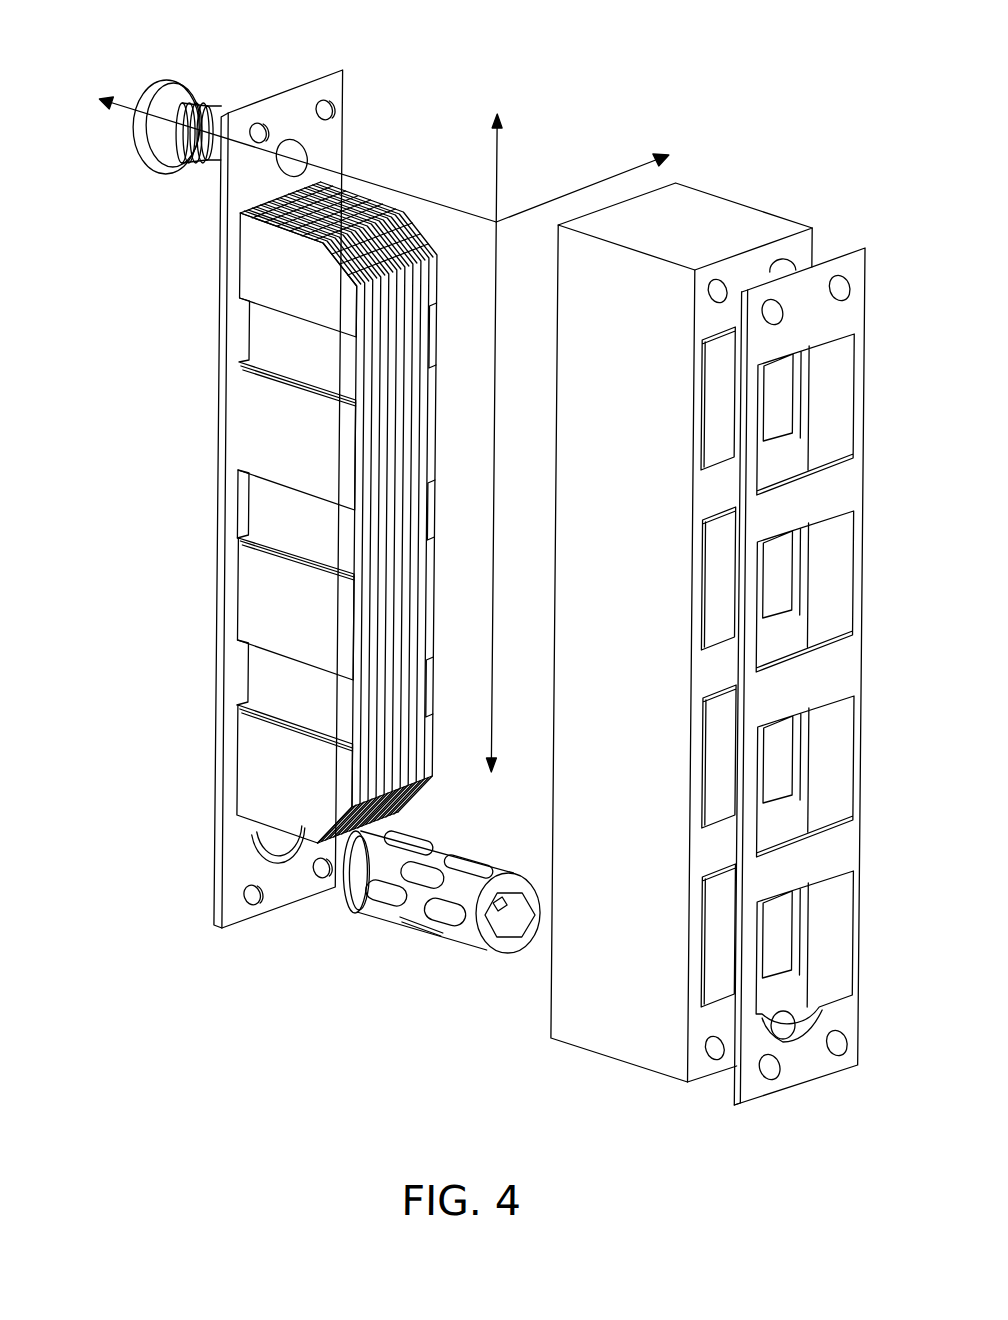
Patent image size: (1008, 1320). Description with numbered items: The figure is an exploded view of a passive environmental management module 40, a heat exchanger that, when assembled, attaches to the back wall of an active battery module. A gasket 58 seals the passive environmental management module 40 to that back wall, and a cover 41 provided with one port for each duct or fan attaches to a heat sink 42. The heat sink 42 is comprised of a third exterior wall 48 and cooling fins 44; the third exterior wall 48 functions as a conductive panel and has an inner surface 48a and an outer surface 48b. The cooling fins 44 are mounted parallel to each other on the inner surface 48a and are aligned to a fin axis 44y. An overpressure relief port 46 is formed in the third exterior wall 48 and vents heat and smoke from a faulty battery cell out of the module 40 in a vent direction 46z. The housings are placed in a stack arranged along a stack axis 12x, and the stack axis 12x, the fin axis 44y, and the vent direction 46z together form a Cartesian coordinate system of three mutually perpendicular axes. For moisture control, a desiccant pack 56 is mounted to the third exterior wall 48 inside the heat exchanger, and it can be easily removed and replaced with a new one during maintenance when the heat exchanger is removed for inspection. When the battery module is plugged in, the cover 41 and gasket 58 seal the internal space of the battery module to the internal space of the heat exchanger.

The passive environmental management module 40 is at (768, 122).
The cover 41 is at (770, 225).
The heat sink 42 is at (537, 1001).
The cooling fins 44 is at (256, 578).
The fin axis 44y is at (497, 173).
The stack axis 12x is at (621, 173).
The overpressure relief port 46 is at (215, 110).
The vent direction 46z is at (357, 182).
The third exterior wall 48 is at (177, 637).
The inner surface 48a is at (221, 707).
The outer surface 48b is at (218, 815).
The desiccant pack 56 is at (463, 935).
The gasket 58 is at (742, 1100).